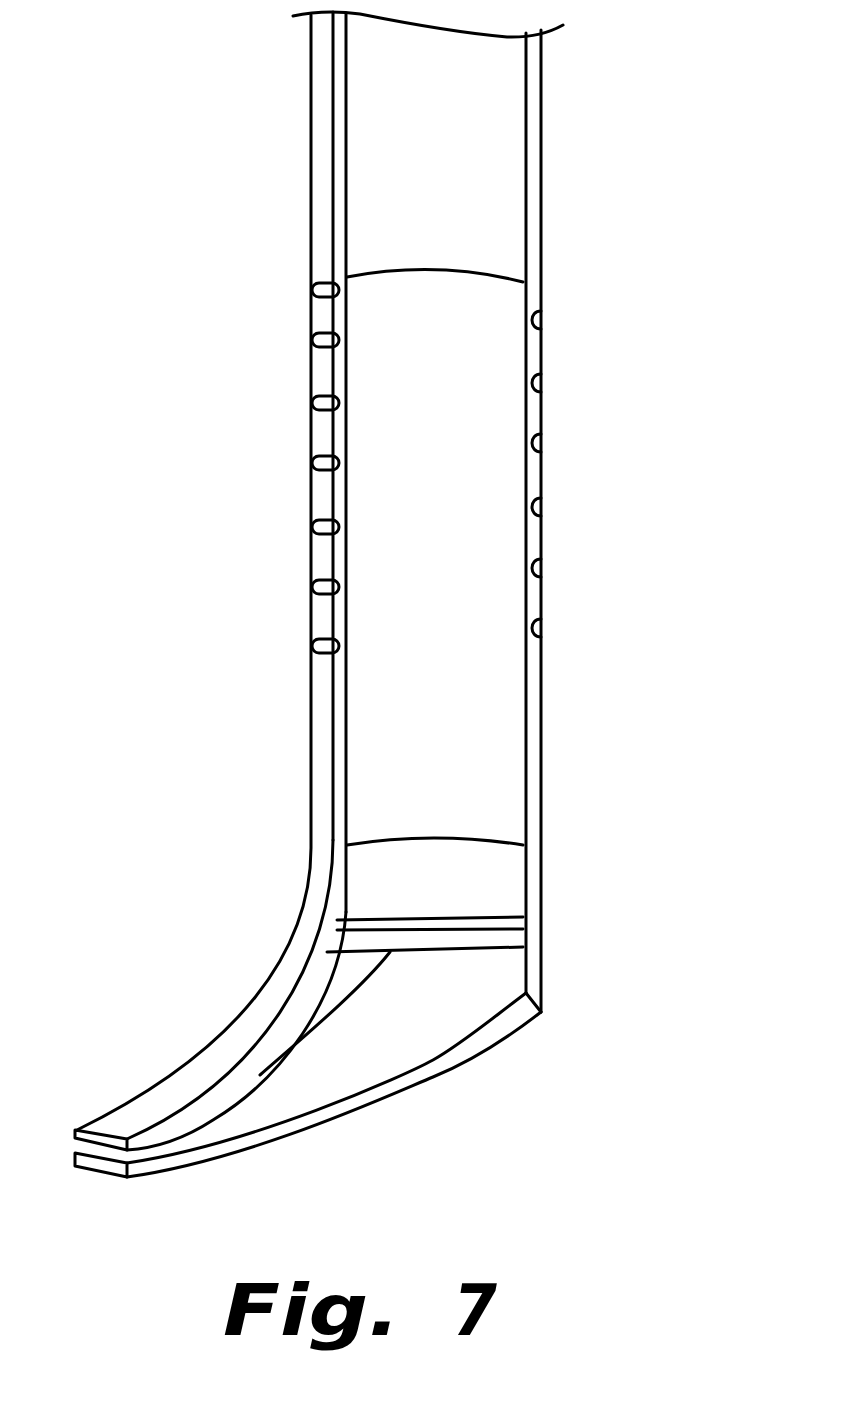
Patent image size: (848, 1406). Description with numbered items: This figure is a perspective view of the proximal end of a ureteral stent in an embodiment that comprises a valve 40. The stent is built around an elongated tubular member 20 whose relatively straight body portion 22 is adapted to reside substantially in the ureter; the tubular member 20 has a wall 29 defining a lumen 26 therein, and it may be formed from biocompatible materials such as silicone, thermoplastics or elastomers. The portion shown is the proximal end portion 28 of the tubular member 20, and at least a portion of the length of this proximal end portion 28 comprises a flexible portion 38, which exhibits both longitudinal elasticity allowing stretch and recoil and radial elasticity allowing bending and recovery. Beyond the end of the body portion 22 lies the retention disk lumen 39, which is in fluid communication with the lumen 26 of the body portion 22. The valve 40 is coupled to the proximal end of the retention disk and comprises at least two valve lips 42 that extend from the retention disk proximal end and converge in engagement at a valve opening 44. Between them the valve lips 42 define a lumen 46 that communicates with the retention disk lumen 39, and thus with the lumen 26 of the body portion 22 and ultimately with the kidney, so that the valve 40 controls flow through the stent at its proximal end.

The elongated tubular member 20 is at (311, 99).
The body portion 22 is at (545, 153).
The lumen 26 is at (437, 467).
The proximal end portion 28 is at (545, 266).
The wall 29 is at (335, 210).
The flexible portion 38 is at (542, 428).
The retention disk lumen 39 is at (427, 962).
The valve 40 is at (488, 1092).
The valve lips 42 is at (355, 1108).
The valve opening 44 is at (93, 1176).
The lumen 46 is at (300, 1090).